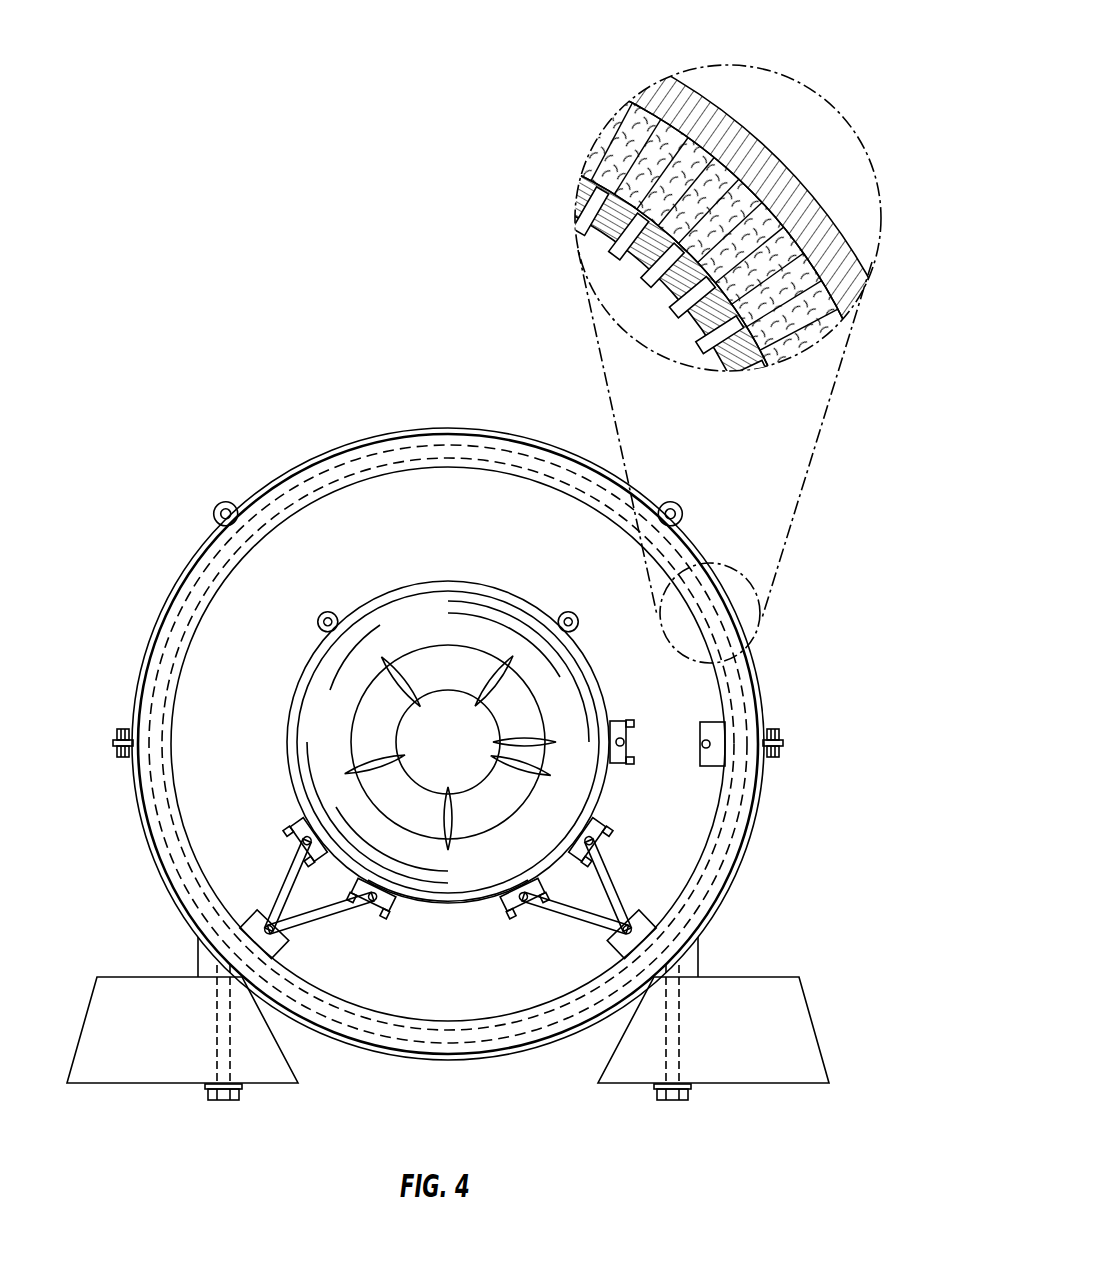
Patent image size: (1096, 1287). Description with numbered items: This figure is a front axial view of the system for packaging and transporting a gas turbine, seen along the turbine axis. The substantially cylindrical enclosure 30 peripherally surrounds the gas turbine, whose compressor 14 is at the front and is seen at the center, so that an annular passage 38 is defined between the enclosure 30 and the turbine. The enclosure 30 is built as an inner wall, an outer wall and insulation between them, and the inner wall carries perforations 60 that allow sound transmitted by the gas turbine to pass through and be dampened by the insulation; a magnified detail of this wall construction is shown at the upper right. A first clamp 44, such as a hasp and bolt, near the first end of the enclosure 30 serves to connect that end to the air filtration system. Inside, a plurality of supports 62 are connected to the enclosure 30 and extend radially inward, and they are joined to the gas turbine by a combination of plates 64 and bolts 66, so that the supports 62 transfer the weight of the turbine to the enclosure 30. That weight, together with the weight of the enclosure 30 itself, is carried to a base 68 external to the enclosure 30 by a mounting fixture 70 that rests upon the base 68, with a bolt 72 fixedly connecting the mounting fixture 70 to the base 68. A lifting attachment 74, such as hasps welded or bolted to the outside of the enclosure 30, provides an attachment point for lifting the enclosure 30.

The compressor 14 is at (292, 702).
The enclosure 30 is at (742, 870).
The annular passage 38 is at (271, 629).
The first clamp 44 is at (444, 704).
The perforations 60 is at (614, 250).
The supports 62 is at (343, 908).
The plates 64 is at (487, 900).
The bolts 66 is at (396, 907).
The base 68 is at (144, 1052).
The mounting fixture 70 is at (197, 962).
The bolt 72 is at (223, 1102).
The lifting attachment 74 is at (226, 503).